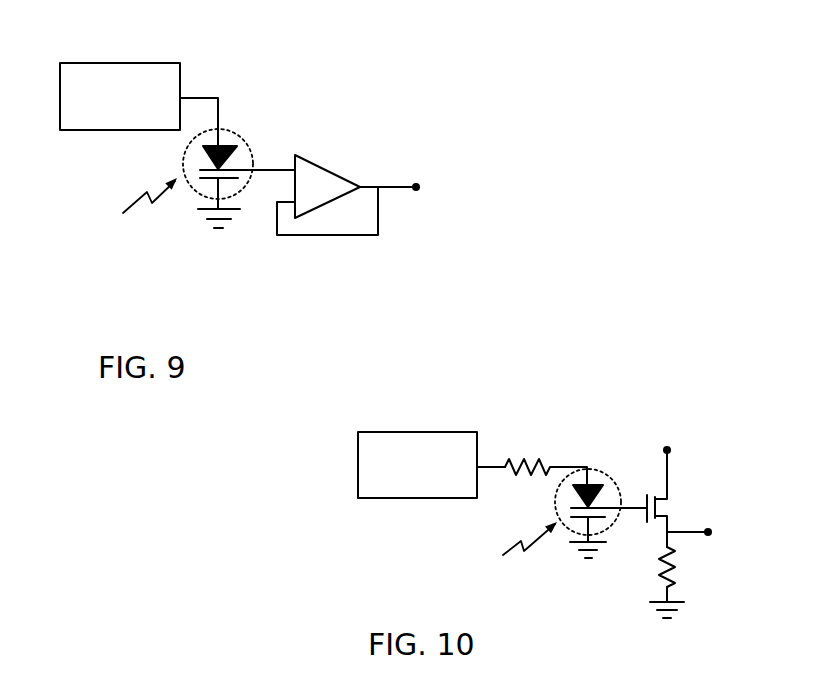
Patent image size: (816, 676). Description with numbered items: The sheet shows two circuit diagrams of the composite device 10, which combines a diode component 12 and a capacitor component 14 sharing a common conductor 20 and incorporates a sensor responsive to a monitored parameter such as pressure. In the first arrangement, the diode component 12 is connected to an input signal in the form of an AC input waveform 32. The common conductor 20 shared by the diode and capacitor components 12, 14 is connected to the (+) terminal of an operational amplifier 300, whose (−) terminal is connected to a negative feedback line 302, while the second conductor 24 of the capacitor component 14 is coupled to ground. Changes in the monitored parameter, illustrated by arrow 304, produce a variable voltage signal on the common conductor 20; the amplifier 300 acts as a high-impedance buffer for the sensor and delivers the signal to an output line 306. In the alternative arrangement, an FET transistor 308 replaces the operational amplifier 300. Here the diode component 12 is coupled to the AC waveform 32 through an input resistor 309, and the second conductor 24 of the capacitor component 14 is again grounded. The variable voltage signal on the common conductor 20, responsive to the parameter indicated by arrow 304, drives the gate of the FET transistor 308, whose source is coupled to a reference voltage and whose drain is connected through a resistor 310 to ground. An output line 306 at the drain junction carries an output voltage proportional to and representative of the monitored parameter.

In FIG. 9, the composite device 10 is at (264, 128).
In FIG. 10, the composite device 10 is at (616, 458).
In FIG. 9, the diode component 12 is at (203, 146).
In FIG. 10, the diode component 12 is at (573, 485).
In FIG. 9, the capacitor component 14 is at (203, 180).
In FIG. 10, the capacitor component 14 is at (571, 517).
In FIG. 9, the common conductor 20 is at (271, 169).
In FIG. 10, the common conductor 20 is at (618, 508).
In FIG. 9, the second conductor 24 is at (240, 193).
In FIG. 10, the second conductor 24 is at (578, 530).
In FIG. 9, the AC input waveform 32 is at (137, 63).
In FIG. 10, the AC input waveform 32 is at (436, 432).
In FIG. 9, the operational amplifier 300 is at (338, 172).
In FIG. 9, the negative feedback line 302 is at (348, 235).
In FIG. 9, the arrow 304 is at (138, 197).
In FIG. 10, the arrow 304 is at (512, 546).
In FIG. 9, the output line 306 is at (403, 184).
In FIG. 10, the output line 306 is at (695, 529).
In FIG. 10, the FET transistor 308 is at (700, 492).
In FIG. 10, the input resistor 309 is at (540, 462).
In FIG. 10, the resistor 310 is at (672, 572).